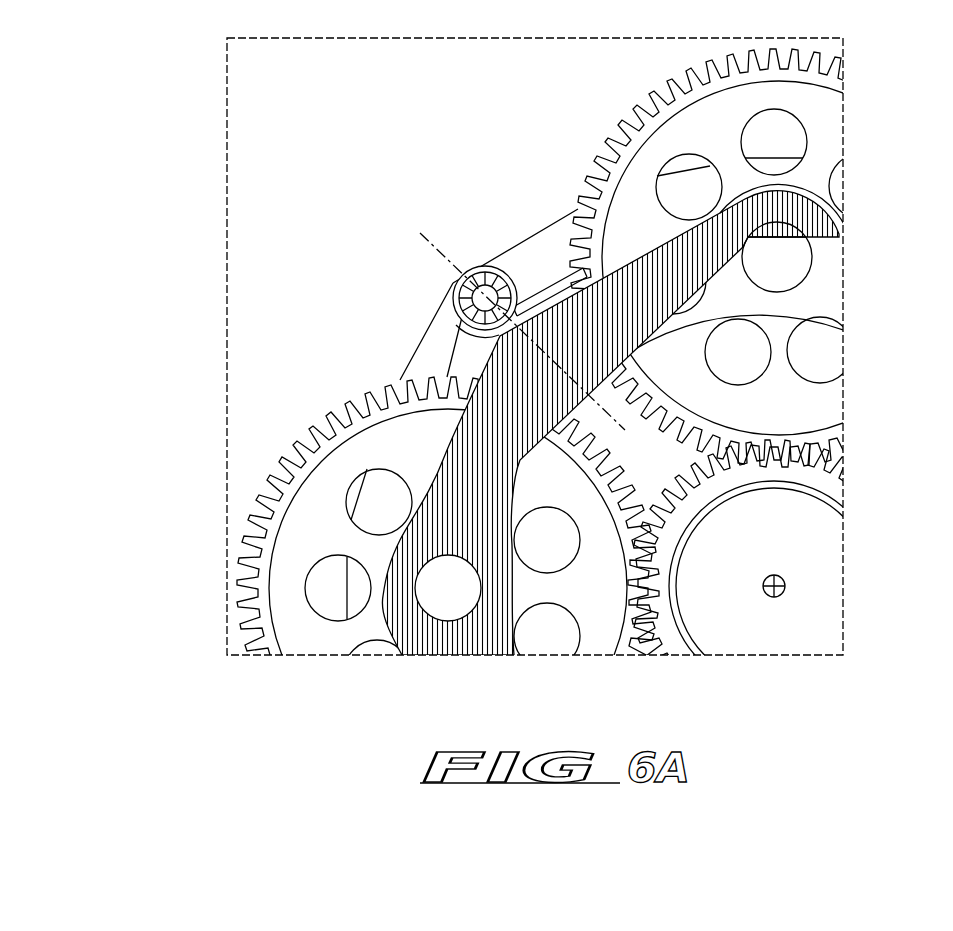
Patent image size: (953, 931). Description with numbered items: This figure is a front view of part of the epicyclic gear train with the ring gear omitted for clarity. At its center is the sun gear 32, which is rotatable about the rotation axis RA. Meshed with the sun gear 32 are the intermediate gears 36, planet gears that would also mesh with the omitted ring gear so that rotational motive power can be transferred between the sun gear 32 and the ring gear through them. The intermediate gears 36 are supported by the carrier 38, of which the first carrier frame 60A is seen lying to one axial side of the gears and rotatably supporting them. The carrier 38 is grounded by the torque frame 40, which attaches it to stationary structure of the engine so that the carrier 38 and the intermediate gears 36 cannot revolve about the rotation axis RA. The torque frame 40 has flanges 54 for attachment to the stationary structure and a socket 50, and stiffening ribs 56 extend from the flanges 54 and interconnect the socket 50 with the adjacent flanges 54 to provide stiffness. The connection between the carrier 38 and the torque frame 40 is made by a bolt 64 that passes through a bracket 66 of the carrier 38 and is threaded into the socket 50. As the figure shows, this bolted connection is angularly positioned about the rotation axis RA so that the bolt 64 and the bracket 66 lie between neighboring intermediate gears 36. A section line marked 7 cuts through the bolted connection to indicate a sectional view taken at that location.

The intermediate gear 36 is at (300, 533).
The sun gear 32 is at (843, 486).
The carrier 38 is at (479, 420).
The first carrier frame 60A is at (478, 462).
The flange 54 is at (562, 227).
The torque frame 40 is at (621, 279).
The socket 50 is at (441, 257).
The stiffening rib 56 is at (555, 270).
The bolt 64 is at (454, 300).
The bracket 66 is at (497, 345).
The section line 7 is at (592, 463).
The rotation axis RA is at (870, 600).